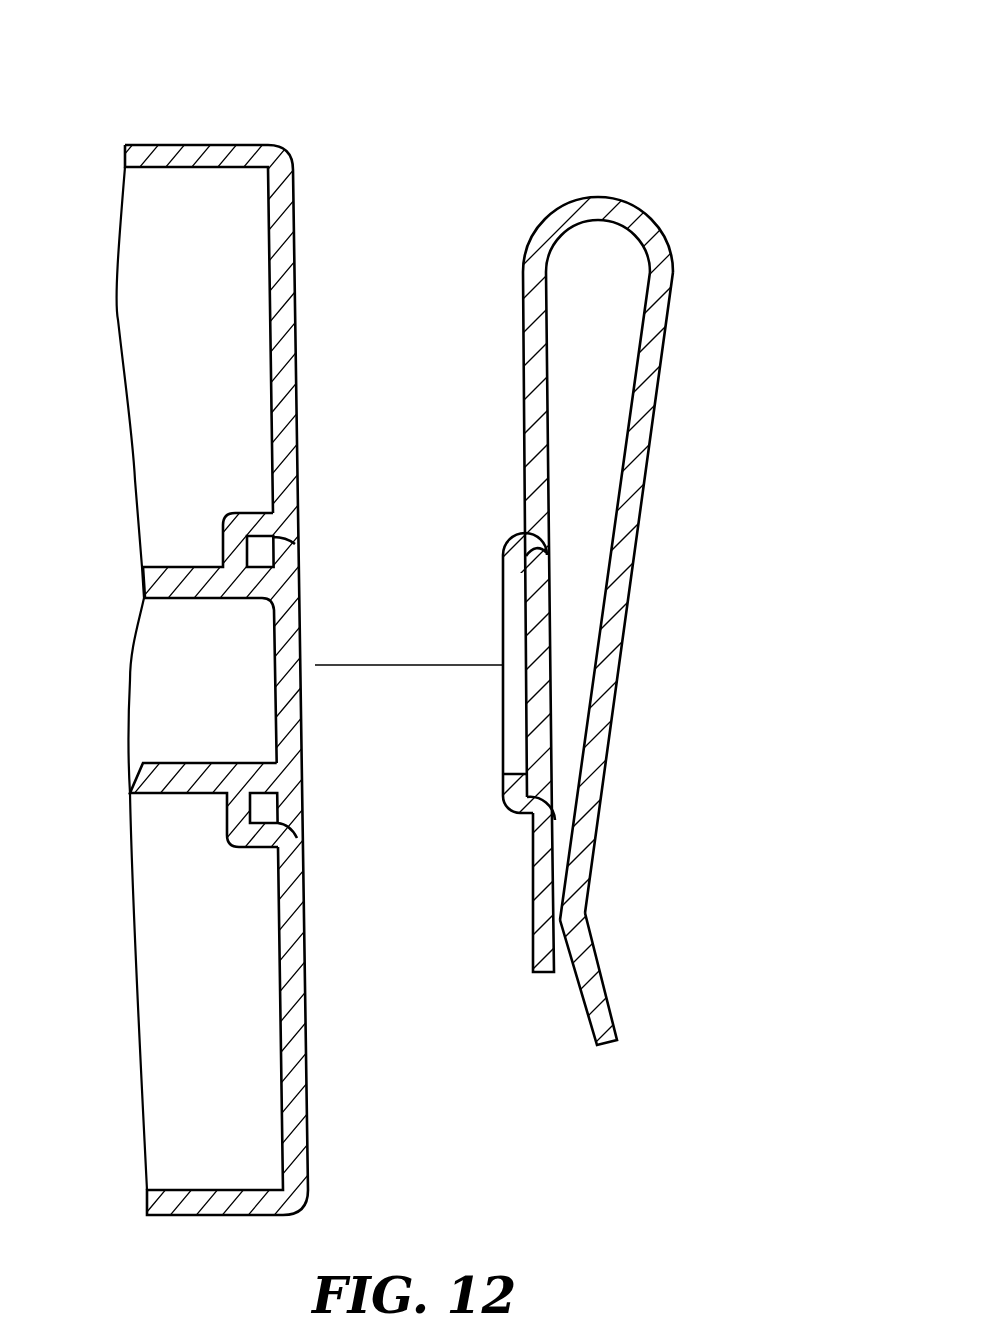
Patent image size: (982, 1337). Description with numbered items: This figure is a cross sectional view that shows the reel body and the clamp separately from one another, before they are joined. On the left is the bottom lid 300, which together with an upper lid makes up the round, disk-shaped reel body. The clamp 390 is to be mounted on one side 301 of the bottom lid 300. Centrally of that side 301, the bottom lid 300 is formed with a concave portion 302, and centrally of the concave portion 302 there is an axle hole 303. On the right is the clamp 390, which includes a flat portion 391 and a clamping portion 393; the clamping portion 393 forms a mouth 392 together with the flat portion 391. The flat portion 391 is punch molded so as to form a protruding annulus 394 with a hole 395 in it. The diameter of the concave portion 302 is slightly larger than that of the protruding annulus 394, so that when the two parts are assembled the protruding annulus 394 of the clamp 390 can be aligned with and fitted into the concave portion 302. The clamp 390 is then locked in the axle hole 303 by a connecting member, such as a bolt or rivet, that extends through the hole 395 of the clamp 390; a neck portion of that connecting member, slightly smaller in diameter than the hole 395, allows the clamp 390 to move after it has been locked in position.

The bottom lid 300 is at (177, 145).
The side 301 is at (291, 257).
The concave portion 302 is at (287, 617).
The axle hole 303 is at (210, 690).
The clamp 390 is at (640, 205).
The flat portion 391 is at (545, 353).
The mouth 392 is at (565, 977).
The clamping portion 393 is at (623, 475).
The protruding annulus 394 is at (508, 532).
The hole 395 is at (500, 643).